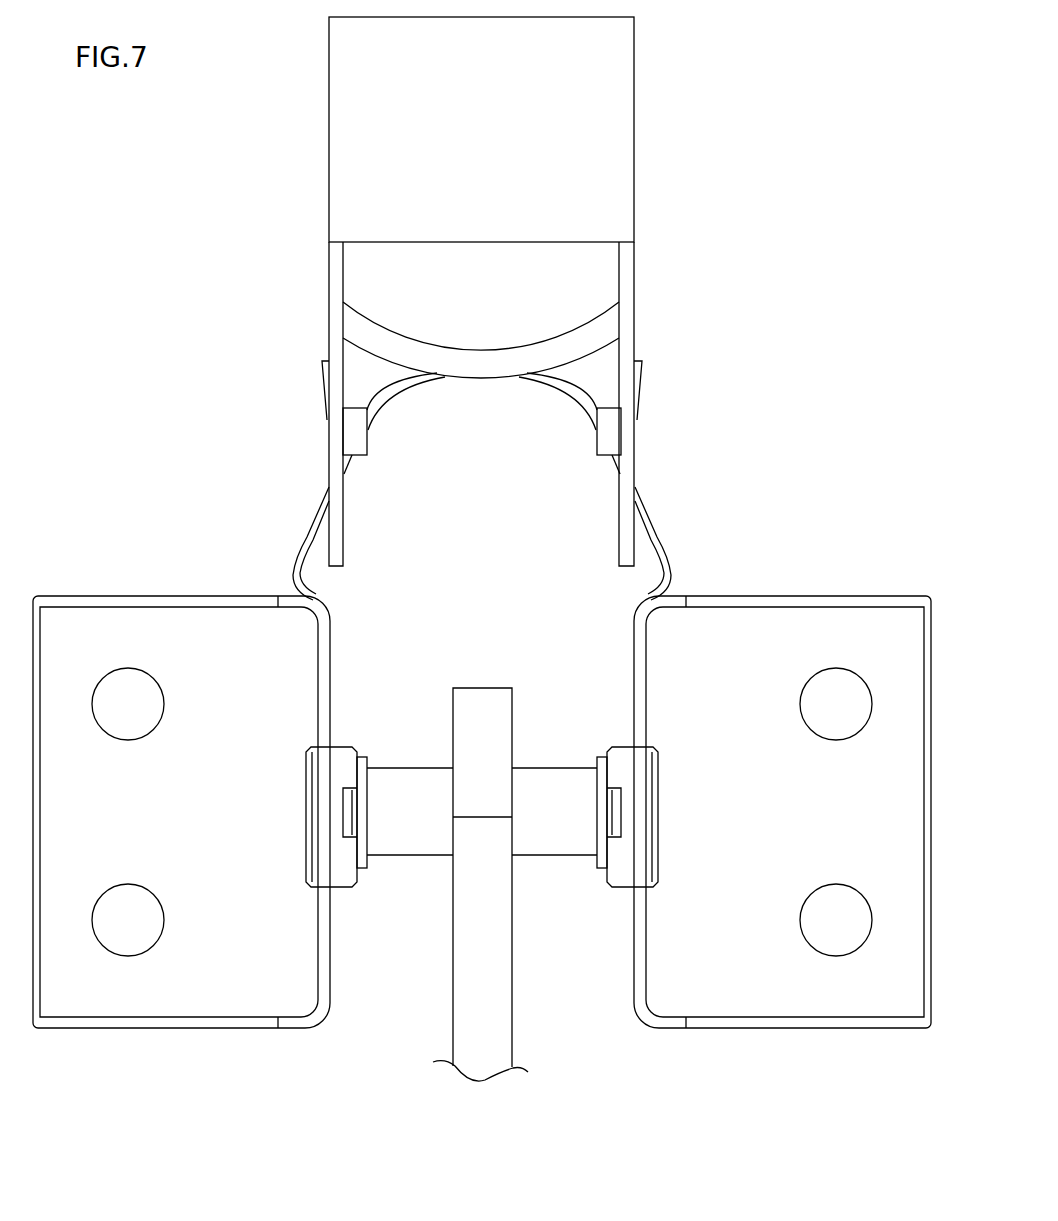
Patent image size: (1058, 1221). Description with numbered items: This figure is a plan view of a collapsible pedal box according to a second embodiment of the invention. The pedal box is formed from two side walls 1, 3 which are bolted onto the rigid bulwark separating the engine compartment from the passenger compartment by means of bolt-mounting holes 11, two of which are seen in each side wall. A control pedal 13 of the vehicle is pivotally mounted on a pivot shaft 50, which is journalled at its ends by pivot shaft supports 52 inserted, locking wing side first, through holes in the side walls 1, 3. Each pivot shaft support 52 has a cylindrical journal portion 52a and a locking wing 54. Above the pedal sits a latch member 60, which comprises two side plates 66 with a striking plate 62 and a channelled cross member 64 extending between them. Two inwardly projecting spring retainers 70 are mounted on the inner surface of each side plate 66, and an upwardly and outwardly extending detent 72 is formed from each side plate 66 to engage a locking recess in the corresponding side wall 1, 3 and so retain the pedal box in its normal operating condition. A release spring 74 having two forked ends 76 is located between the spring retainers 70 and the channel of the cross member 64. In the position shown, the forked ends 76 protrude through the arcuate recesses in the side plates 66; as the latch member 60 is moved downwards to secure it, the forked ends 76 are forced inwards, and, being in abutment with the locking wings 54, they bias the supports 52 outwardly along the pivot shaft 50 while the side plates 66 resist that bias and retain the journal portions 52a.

The side wall 1 is at (642, 650).
The side wall 3 is at (322, 657).
The bolt-mounting holes 11 is at (120, 729).
The control pedal 13 is at (503, 982).
The pivot shaft 50 is at (422, 838).
The pivot shaft support 52 is at (295, 813).
The cylindrical journal portion 52a is at (626, 747).
The locking wing 54 is at (348, 802).
The latch member 60 is at (318, 212).
The striking plate 62 is at (560, 88).
The channelled cross member 64 is at (601, 328).
The side plates 66 is at (333, 316).
The spring retainers 70 is at (348, 437).
The detent 72 is at (642, 372).
The release spring 74 is at (655, 499).
The forked ends 76 is at (293, 563).